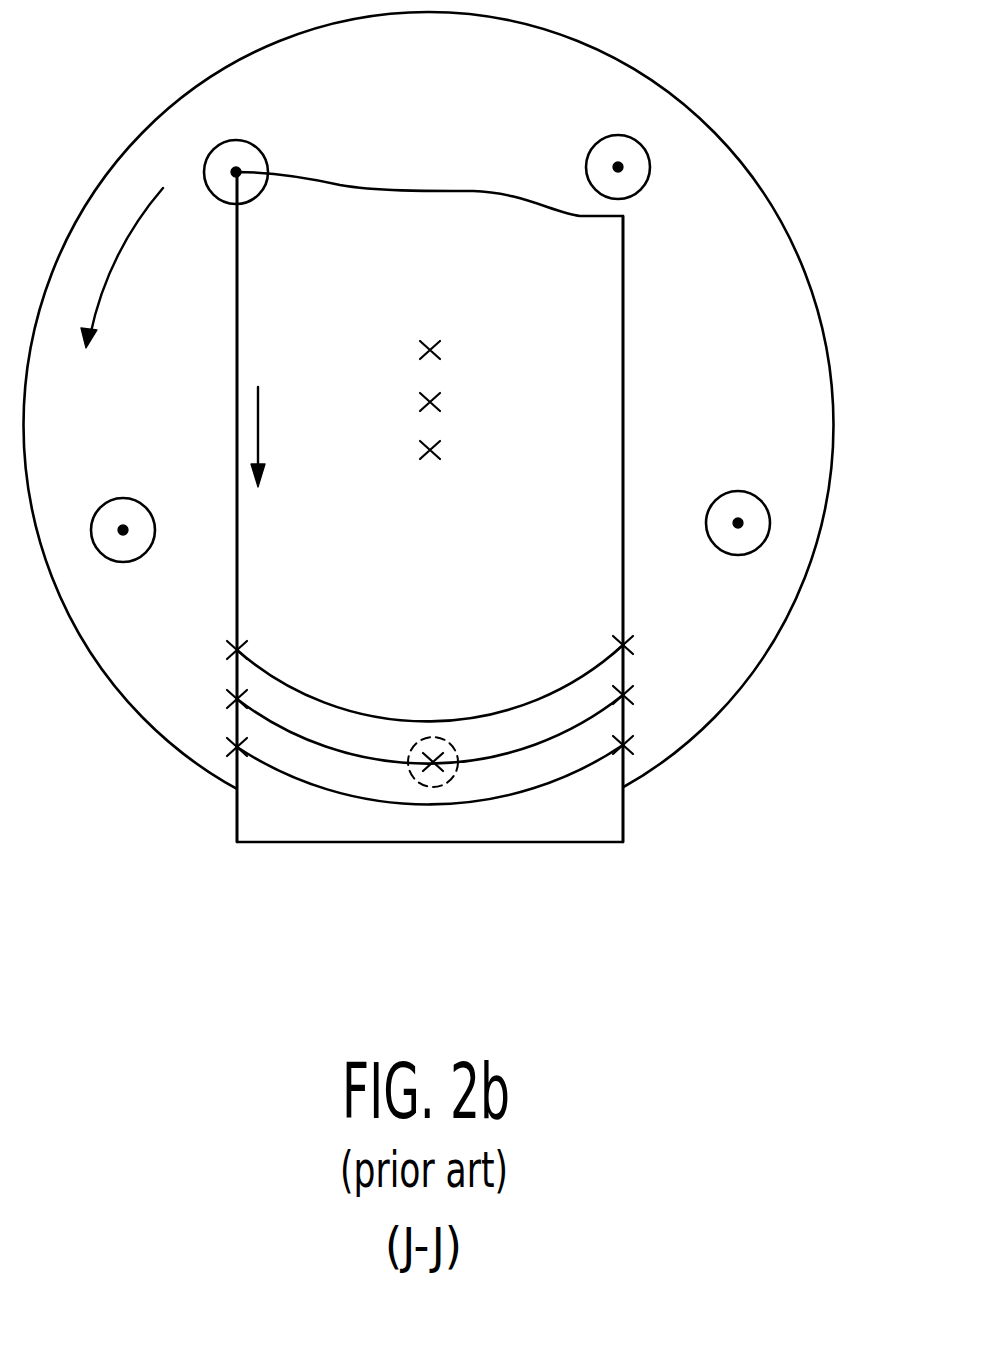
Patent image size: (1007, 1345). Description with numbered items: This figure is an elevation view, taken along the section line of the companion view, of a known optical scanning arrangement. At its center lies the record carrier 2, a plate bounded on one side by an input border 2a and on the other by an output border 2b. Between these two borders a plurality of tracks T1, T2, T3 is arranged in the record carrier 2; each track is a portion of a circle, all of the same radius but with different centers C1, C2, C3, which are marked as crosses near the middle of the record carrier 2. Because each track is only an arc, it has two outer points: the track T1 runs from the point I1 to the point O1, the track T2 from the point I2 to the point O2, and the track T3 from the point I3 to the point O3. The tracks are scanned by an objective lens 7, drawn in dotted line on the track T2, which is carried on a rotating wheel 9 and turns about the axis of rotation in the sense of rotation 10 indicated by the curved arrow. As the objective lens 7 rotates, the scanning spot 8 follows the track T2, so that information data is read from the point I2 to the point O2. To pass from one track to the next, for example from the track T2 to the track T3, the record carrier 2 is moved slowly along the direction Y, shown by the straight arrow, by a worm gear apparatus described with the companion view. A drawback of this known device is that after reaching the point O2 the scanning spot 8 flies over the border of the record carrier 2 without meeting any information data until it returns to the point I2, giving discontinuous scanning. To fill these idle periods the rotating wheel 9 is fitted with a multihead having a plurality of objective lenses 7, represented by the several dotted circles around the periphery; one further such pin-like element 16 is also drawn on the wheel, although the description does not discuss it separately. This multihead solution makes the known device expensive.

The record carrier 2 is at (623, 365).
The input border 2a is at (623, 568).
The output border 2b is at (237, 573).
The objective lens 7 is at (203, 155).
The scanning spot 8 is at (433, 760).
The rotating wheel 9 is at (803, 268).
The sense of rotation 10 is at (108, 280).
The support pin 16 is at (645, 190).
The direction Y is at (260, 428).
The center of track T1 C1 is at (442, 348).
The center of track T2 C2 is at (442, 400).
The center of track T3 C3 is at (442, 448).
The track T1 is at (503, 715).
The track T2 is at (370, 760).
The track T3 is at (307, 785).
The input point of track T1 I1 is at (237, 650).
The input point of track T2 I2 is at (237, 699).
The input point of track T3 I3 is at (237, 747).
The output point of track T1 O1 is at (630, 640).
The output point of track T2 O2 is at (630, 692).
The output point of track T3 O3 is at (623, 745).